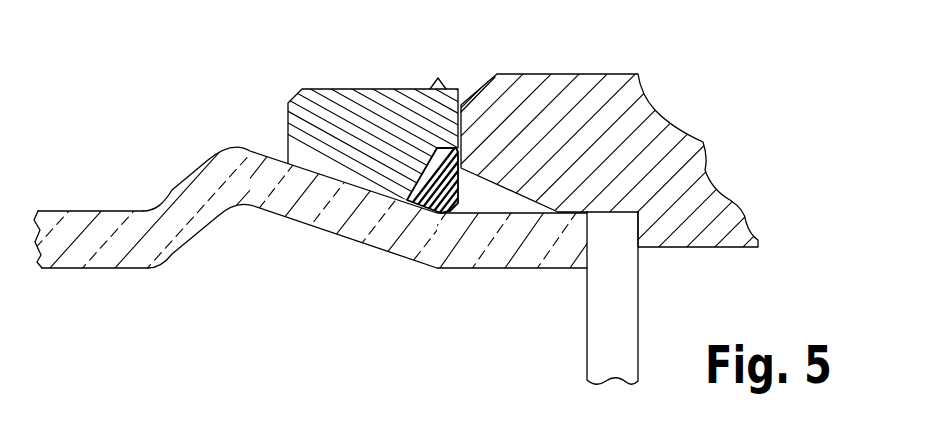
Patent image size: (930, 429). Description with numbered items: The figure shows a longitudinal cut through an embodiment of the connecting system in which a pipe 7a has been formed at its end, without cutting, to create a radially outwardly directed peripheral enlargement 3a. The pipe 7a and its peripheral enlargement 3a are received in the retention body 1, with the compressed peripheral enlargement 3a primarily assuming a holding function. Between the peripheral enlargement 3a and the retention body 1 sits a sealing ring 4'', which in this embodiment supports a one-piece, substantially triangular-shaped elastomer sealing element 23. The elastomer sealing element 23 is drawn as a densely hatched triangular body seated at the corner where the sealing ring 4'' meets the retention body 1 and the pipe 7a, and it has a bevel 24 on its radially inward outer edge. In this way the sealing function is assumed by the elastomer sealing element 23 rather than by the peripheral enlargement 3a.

The retention body 1 is at (578, 100).
The peripheral enlargement 3a is at (239, 160).
The sealing ring 4'' is at (431, 102).
The pipe 7a is at (80, 255).
The elastomer sealing element 23 is at (460, 152).
The bevel 24 is at (455, 206).